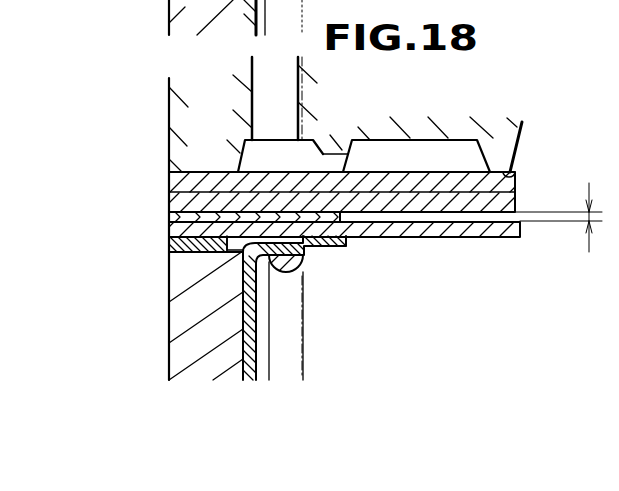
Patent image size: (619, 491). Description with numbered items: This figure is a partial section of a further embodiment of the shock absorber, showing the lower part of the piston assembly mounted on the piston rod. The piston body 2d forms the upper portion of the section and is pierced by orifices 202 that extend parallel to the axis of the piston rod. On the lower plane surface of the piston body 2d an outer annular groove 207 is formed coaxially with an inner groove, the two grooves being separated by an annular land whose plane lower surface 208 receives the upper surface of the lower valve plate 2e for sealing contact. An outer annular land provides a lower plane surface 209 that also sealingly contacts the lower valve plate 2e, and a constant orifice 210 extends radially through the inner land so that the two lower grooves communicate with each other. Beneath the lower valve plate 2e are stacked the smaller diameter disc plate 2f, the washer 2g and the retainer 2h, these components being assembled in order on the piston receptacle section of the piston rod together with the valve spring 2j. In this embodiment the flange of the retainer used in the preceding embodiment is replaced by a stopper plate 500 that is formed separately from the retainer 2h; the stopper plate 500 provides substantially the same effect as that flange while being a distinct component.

The piston body 2d is at (200, 117).
The lower valve plate 2e is at (195, 190).
The smaller diameter disc plate 2f is at (190, 216).
The washer 2g is at (180, 240).
The retainer 2h is at (339, 249).
The valve spring 2j is at (302, 266).
The orifice 202 is at (287, 90).
The outer annular groove 207 is at (335, 150).
The constant orifice 210 is at (345, 150).
The lower plane surface of outer annular land 209 is at (517, 170).
The plane lower surface of land 208 is at (383, 226).
The stopper plate 500 is at (506, 228).